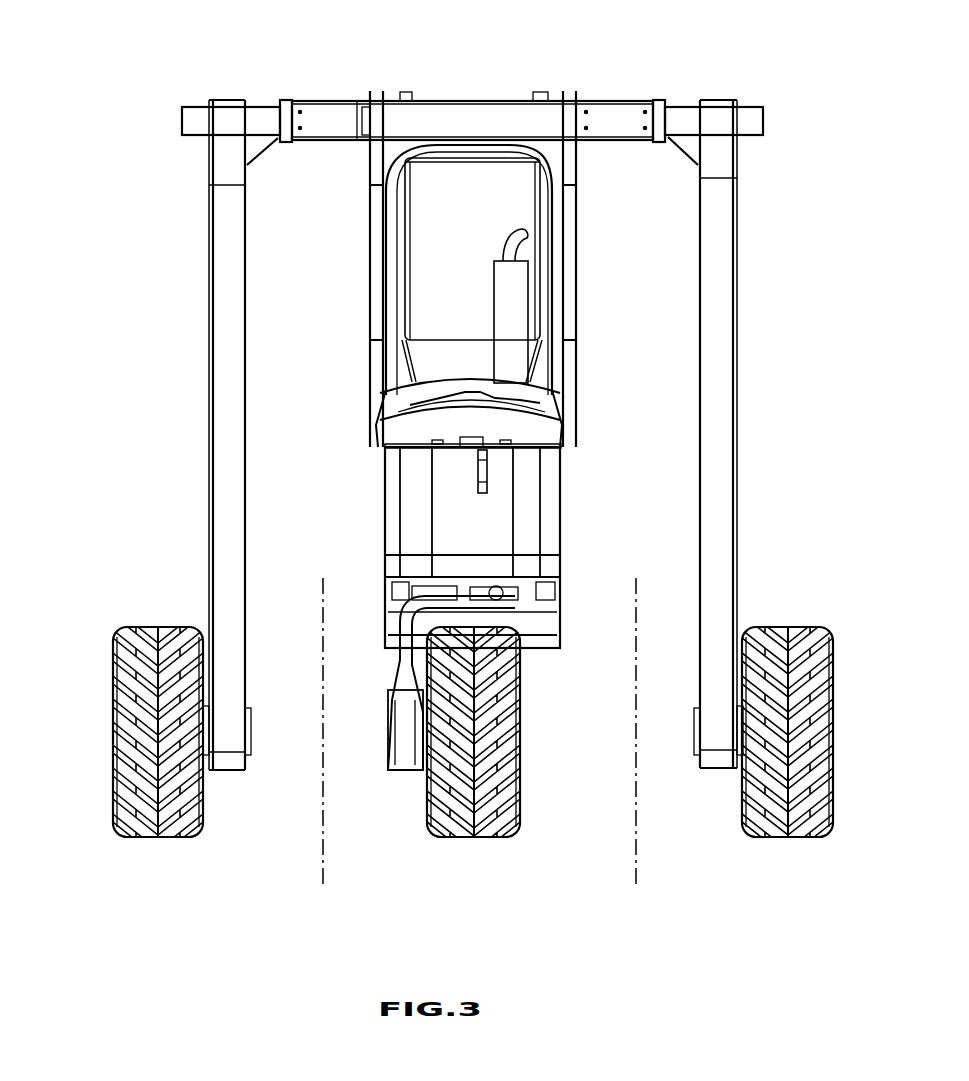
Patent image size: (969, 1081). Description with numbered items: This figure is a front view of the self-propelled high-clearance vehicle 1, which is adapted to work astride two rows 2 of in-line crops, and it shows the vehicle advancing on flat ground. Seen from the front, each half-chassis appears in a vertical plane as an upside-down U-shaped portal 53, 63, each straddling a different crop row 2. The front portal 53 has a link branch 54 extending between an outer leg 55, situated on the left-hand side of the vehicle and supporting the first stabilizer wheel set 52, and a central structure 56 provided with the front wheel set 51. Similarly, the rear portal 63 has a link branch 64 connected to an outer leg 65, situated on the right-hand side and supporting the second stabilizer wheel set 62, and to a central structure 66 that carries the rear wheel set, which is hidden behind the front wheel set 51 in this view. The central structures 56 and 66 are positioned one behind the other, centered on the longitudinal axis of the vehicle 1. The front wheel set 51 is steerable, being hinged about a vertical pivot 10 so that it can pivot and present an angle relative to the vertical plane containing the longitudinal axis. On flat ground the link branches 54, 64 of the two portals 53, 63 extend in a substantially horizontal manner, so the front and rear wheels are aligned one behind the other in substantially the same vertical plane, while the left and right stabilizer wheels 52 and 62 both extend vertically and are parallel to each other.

The self-propelled high-clearance vehicle 1 is at (108, 205).
The crop row 2 is at (323, 814).
The vertical pivot 10 is at (478, 583).
The front wheel set 51 is at (476, 840).
The first stabilizer wheel set 52 is at (833, 745).
The upside-down U-shaped portal 53 is at (683, 89).
The link branch 54 is at (620, 128).
The outer leg 55 is at (733, 352).
The central structure 56 is at (393, 503).
The second stabilizer wheel set 62 is at (113, 740).
The upside-down U-shaped portal 63 is at (313, 96).
The link branch 64 is at (260, 118).
The outer leg 65 is at (223, 375).
The central structure 66 is at (430, 250).